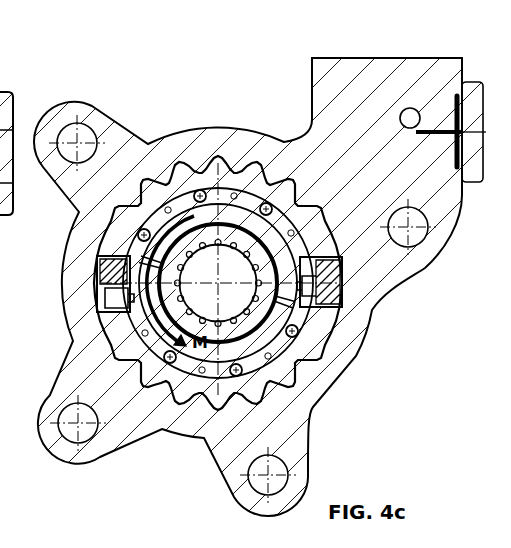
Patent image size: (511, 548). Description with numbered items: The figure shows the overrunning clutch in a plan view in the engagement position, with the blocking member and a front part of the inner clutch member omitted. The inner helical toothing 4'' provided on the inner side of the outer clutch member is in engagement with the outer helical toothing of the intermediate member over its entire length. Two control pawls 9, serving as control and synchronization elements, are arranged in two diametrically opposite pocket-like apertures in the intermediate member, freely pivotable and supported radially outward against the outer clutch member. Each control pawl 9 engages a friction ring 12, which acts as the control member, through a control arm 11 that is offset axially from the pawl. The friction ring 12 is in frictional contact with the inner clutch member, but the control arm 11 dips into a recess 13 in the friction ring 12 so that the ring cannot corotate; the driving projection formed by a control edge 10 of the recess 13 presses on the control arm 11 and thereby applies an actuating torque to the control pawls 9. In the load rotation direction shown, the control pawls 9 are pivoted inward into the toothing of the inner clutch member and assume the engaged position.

The inner helical toothing 4'' is at (245, 289).
The control pawl 9 is at (345, 318).
The control edge 10 is at (116, 294).
The control arm 11 is at (312, 257).
The friction ring 12 is at (233, 197).
The recess 13 is at (110, 301).